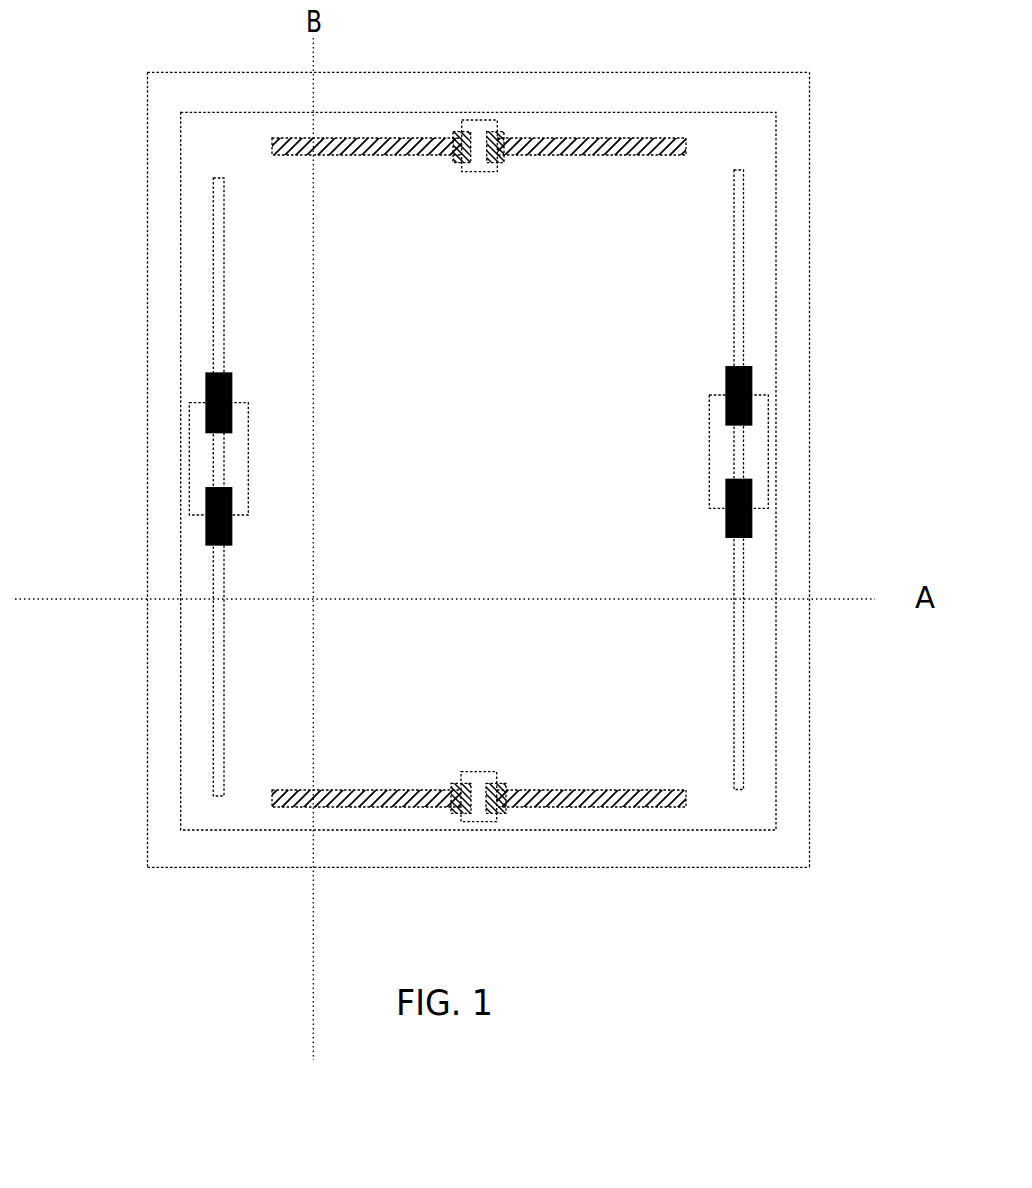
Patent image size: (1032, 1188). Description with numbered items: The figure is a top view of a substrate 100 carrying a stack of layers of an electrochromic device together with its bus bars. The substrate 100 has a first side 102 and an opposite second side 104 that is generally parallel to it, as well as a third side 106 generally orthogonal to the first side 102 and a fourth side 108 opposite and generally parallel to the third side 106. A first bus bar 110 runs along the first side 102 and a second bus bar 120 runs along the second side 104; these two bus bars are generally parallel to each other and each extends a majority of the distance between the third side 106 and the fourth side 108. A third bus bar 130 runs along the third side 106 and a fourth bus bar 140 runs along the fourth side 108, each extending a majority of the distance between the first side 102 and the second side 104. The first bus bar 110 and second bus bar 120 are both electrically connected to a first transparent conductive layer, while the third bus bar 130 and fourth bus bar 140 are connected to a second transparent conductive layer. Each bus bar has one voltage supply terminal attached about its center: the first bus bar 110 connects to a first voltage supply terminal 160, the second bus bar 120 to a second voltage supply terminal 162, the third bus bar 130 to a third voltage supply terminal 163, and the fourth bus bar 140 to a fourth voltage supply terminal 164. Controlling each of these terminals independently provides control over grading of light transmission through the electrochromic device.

The substrate 100 is at (475, 487).
The first side 102 is at (128, 334).
The second side 104 is at (829, 322).
The third side 106 is at (684, 60).
The fourth side 108 is at (597, 884).
The first bus bar 110 is at (243, 341).
The second bus bar 120 is at (716, 296).
The third bus bar 130 is at (350, 170).
The fourth bus bar 140 is at (442, 779).
The first voltage supply terminal 160 is at (213, 447).
The second voltage supply terminal 162 is at (727, 450).
The third voltage supply terminal 163 is at (497, 172).
The fourth voltage supply terminal 164 is at (477, 771).